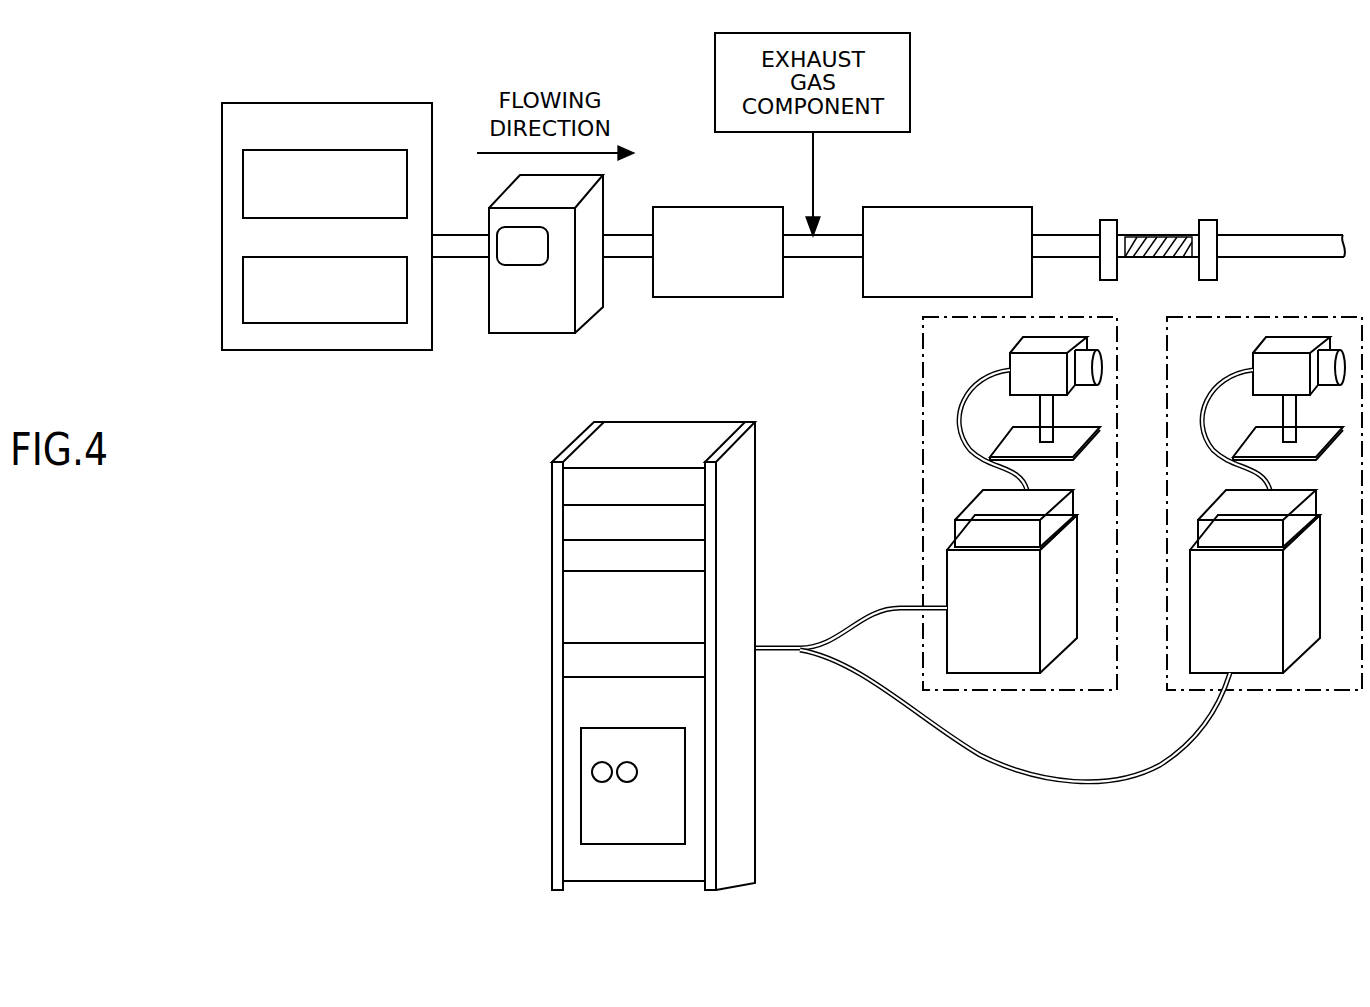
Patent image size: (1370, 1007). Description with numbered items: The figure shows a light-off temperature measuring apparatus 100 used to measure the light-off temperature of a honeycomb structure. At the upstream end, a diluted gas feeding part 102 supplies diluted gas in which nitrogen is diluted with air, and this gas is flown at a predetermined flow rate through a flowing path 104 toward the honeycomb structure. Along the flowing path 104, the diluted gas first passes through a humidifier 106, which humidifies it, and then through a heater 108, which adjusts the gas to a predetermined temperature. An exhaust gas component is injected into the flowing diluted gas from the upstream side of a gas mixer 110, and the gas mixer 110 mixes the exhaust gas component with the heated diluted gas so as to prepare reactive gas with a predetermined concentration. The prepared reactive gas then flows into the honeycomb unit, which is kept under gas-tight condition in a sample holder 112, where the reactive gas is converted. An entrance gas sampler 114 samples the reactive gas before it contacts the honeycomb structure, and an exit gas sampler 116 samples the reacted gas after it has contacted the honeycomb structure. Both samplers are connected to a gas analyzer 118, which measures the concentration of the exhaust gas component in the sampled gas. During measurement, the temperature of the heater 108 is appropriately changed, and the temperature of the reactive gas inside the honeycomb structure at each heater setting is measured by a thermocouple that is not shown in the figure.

The light-off temperature measuring apparatus 100 is at (1053, 53).
The diluted gas feeding part 102 is at (372, 103).
The flowing path 104 is at (452, 258).
The humidifier 106 is at (525, 333).
The heater 108 is at (712, 297).
The gas mixer 110 is at (890, 297).
The sample holder 112 is at (1109, 220).
The entrance gas sampler 114 is at (1100, 690).
The exit gas sampler 116 is at (1330, 690).
The gas analyzer 118 is at (757, 830).